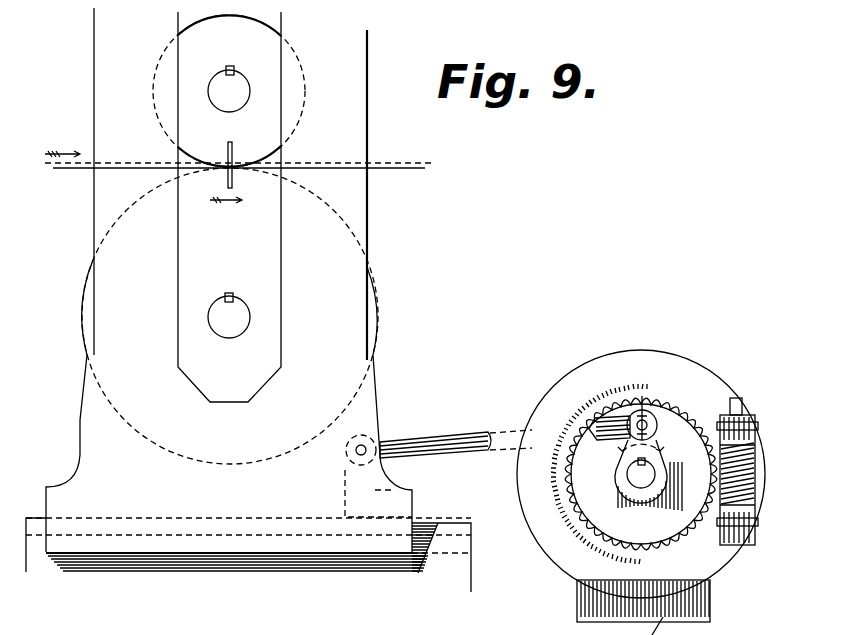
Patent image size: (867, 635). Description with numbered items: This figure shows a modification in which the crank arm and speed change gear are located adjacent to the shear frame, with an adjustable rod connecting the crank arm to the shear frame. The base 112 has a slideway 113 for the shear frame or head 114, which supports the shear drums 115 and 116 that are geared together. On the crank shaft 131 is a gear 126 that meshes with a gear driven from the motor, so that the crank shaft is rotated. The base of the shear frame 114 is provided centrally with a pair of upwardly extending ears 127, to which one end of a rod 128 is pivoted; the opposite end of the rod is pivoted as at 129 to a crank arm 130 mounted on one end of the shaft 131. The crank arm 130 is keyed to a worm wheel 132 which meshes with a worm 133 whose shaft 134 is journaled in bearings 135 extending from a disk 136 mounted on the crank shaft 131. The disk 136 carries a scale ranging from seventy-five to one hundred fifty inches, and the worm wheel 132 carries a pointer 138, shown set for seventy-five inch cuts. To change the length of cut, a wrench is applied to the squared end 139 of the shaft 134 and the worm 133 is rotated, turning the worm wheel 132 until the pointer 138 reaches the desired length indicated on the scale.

The base 112 is at (248, 562).
The slideway 113 is at (445, 552).
The shear frame 114 is at (100, 74).
The shear drum 115 is at (272, 106).
The shear drum 116 is at (86, 297).
The gear 126 is at (248, 332).
The ears 127 is at (353, 468).
The rod 128 is at (468, 437).
The pivot 129 is at (624, 441).
The crank arm 130 is at (657, 458).
The crank shaft 131 is at (638, 481).
The worm wheel 132 is at (650, 556).
The worm 133 is at (752, 470).
The worm shaft 134 is at (746, 515).
The bearings 135 is at (750, 432).
The disk 136 is at (620, 343).
The pointer 138 is at (660, 403).
The squared end 139 is at (738, 400).